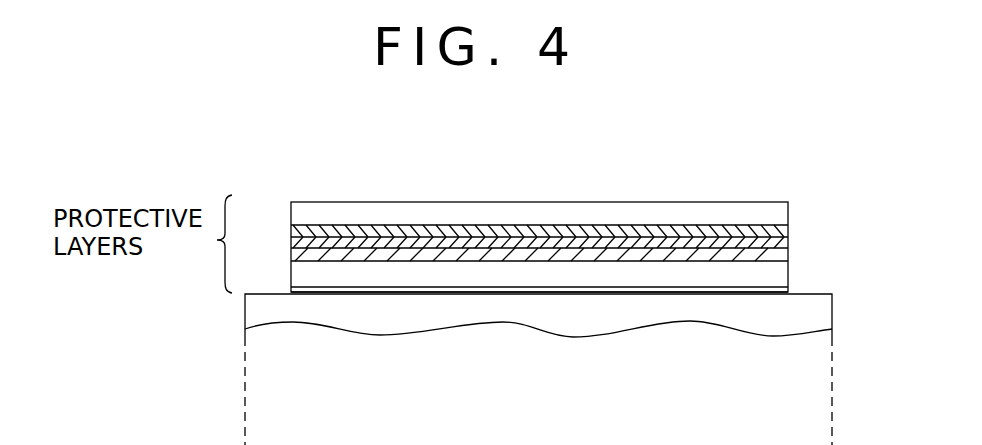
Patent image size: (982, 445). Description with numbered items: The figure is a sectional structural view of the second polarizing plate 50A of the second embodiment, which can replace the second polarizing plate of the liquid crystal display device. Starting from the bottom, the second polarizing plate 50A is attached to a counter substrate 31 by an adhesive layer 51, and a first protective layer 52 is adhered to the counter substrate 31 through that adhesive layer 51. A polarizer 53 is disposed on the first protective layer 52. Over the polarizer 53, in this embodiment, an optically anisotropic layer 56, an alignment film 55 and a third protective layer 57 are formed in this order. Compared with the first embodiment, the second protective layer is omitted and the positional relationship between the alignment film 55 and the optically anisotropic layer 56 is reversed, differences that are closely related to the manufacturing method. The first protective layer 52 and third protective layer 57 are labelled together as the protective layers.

The second polarizing plate 50A is at (793, 190).
The third protective layer 57 is at (291, 212).
The alignment film 55 is at (786, 231).
The optically anisotropic layer 56 is at (786, 243).
The polarizer 53 is at (786, 254).
The first protective layer 52 is at (291, 268).
The adhesive layer 51 is at (786, 291).
The counter substrate 31 is at (255, 315).